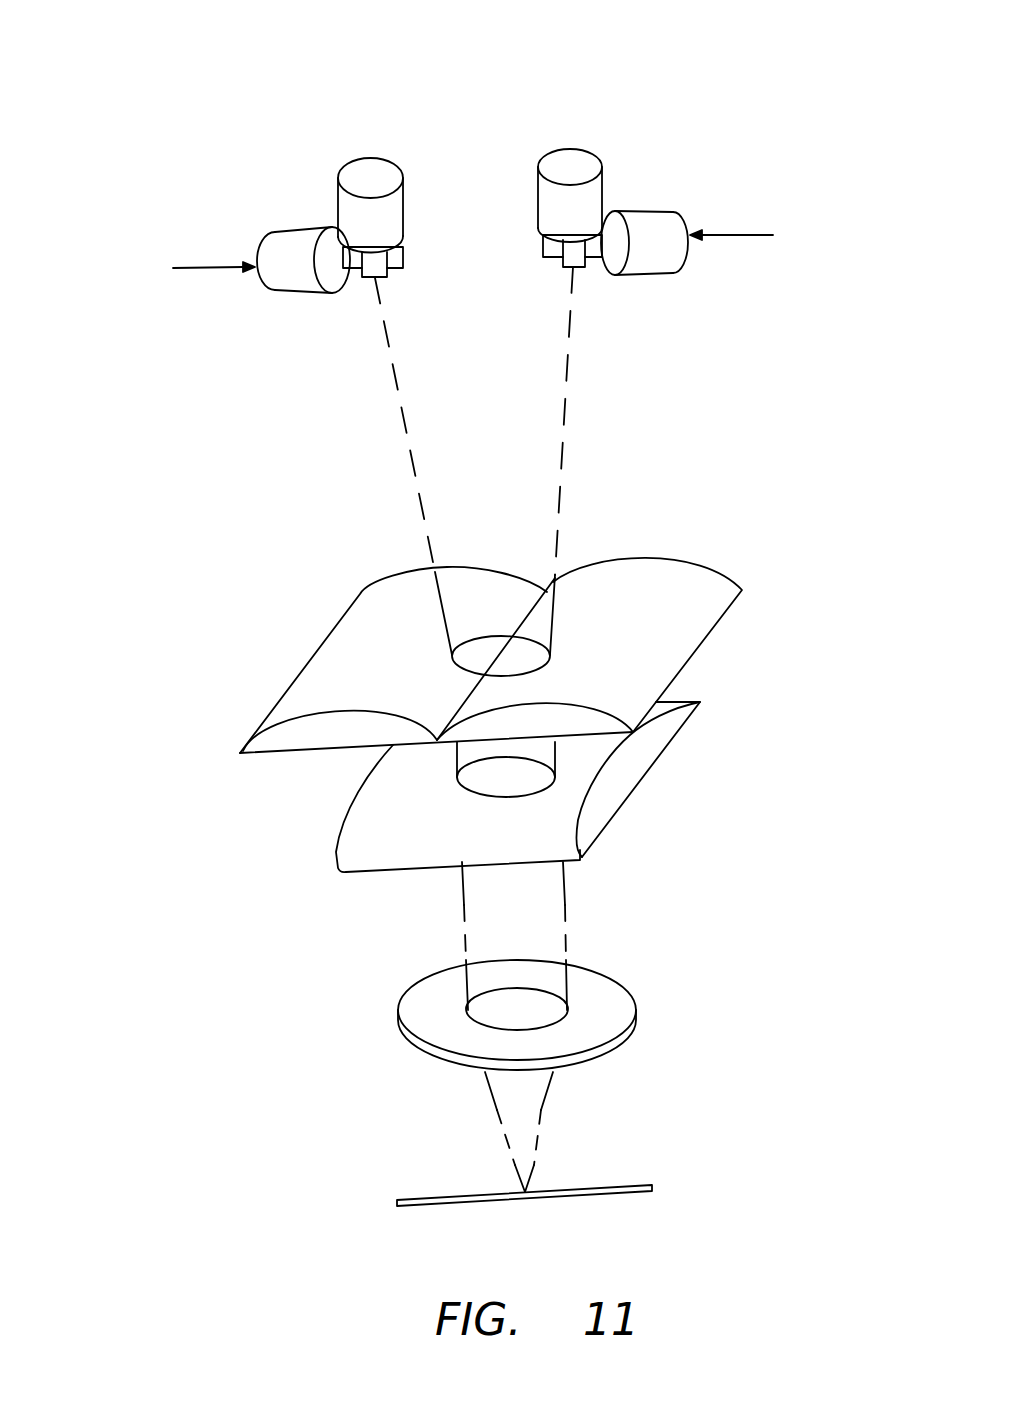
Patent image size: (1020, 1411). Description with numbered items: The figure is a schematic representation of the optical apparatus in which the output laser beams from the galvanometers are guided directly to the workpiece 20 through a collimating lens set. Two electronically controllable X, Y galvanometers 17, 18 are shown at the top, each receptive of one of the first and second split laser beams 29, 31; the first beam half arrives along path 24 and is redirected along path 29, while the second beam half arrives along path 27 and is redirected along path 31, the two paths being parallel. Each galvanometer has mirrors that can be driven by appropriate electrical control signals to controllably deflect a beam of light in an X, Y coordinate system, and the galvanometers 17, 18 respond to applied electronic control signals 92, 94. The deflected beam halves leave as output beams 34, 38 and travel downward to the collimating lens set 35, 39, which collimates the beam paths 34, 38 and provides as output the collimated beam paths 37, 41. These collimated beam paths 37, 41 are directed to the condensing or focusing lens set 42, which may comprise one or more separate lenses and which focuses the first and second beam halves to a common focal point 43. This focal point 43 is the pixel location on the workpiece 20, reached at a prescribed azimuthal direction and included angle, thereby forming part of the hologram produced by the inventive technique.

The X, Y galvanometer 17 is at (283, 169).
The X, Y galvanometer 18 is at (678, 147).
The workpiece 20 is at (652, 1188).
The path 24 is at (368, 169).
The path 27 is at (613, 147).
The path 29 is at (368, 169).
The path 31 is at (613, 147).
The output beam 34 is at (400, 413).
The collimating lens 35 is at (561, 715).
The collimated beam path 37 is at (601, 936).
The output beam 38 is at (565, 438).
The collimating lens 39 is at (752, 558).
The collimated beam path 41 is at (583, 905).
The condensing lens system 42 is at (637, 1003).
The focal point 43 is at (527, 1190).
The electronic control signal 92 is at (223, 268).
The electronic control signal 94 is at (737, 235).